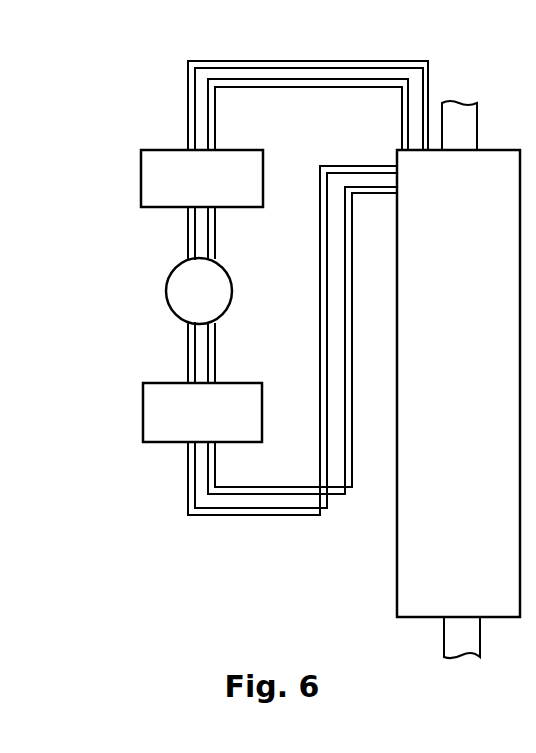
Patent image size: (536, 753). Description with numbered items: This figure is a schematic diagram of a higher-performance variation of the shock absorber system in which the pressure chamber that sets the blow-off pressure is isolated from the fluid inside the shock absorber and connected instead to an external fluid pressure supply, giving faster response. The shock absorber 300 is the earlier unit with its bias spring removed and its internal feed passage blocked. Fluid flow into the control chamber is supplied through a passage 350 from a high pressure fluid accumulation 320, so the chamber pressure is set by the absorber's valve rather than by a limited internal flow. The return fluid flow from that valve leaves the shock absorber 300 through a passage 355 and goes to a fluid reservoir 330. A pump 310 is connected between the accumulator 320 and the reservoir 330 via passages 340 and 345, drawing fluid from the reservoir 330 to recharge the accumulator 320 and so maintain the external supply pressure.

The shock absorber 300 is at (458, 379).
The pump 310 is at (199, 291).
The high pressure fluid accumulation 320 is at (202, 178).
The fluid reservoir 330 is at (202, 412).
The passage 340 is at (188, 227).
The passage 345 is at (188, 340).
The passage 350 is at (332, 62).
The passage 355 is at (265, 517).